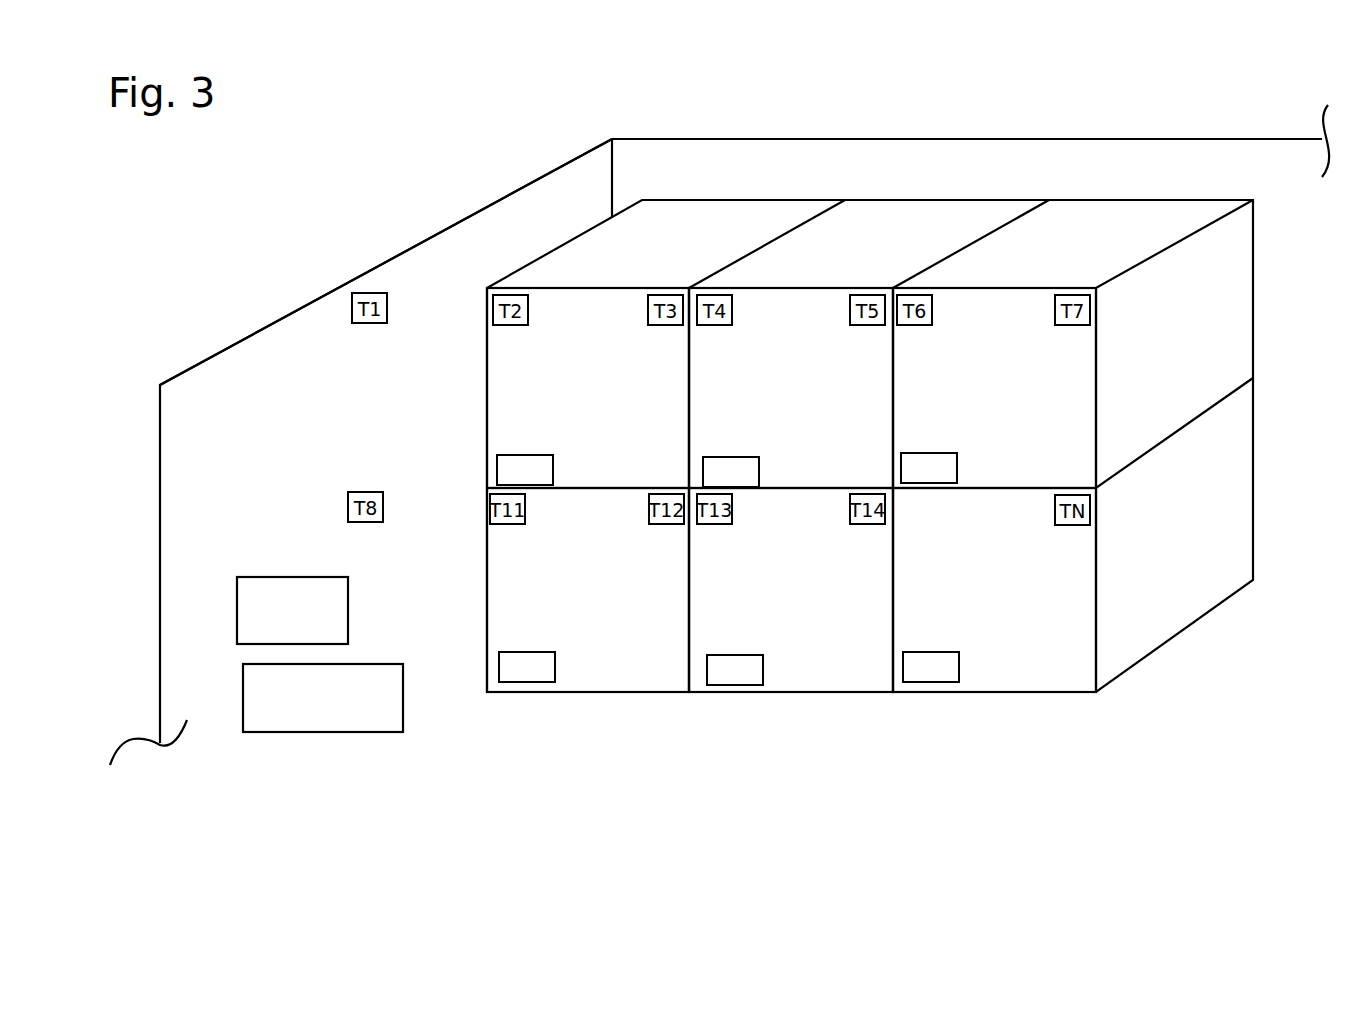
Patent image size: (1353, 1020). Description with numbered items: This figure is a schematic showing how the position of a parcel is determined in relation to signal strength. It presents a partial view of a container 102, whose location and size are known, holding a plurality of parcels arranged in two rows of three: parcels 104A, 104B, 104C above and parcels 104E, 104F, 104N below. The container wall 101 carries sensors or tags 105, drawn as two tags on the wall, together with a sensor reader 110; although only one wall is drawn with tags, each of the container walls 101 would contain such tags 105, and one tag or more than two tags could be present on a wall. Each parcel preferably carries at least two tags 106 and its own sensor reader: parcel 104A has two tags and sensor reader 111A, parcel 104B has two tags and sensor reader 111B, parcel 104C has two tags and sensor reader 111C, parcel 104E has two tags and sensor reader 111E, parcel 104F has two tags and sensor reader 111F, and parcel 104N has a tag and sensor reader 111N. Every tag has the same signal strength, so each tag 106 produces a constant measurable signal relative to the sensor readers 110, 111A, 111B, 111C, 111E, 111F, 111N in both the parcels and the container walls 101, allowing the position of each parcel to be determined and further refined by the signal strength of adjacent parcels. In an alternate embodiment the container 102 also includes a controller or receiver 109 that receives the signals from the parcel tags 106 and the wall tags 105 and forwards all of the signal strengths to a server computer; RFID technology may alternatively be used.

The container wall 101 is at (760, 167).
The container 102 is at (497, 202).
The parcel 104A is at (555, 396).
The parcel 104B is at (763, 404).
The parcel 104C is at (968, 406).
The parcel 104E is at (575, 606).
The parcel 104F is at (763, 606).
The parcel 104N is at (946, 606).
The tag 105 is at (353, 323).
The tag 106 is at (648, 288).
The controller or receiver 109 is at (243, 678).
The sensor reader 110 is at (237, 597).
The sensor reader 111A is at (525, 470).
The sensor reader 111B is at (731, 472).
The sensor reader 111C is at (929, 468).
The sensor reader 111E is at (527, 667).
The sensor reader 111F is at (735, 670).
The sensor reader 111N is at (931, 667).